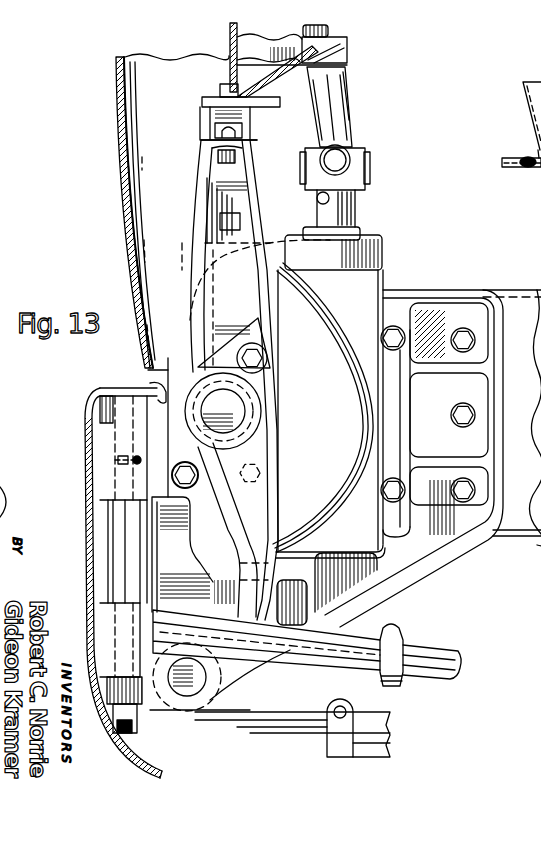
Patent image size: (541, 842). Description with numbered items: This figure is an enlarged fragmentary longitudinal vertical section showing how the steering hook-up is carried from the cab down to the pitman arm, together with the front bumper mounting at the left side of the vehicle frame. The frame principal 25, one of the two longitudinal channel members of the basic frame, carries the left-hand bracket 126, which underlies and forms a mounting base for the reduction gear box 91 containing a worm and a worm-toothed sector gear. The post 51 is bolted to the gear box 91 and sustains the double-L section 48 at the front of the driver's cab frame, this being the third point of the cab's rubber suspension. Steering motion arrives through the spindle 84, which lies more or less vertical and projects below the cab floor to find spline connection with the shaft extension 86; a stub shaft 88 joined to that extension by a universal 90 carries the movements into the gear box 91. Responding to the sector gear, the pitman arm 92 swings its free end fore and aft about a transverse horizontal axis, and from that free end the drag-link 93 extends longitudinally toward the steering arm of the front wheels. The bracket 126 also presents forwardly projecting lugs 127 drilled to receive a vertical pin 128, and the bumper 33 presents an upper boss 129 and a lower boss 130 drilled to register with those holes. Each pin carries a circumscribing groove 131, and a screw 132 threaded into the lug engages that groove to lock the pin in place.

The longitudinal channel member 25 is at (521, 300).
The front bumper 33 is at (88, 498).
The double-L section 48 is at (230, 40).
The post 51 is at (199, 192).
The spindle 84 is at (327, 30).
The shaft extension 86 is at (340, 112).
The stub shaft 88 is at (342, 211).
The universal 90 is at (342, 162).
The reduction gear box 91 is at (391, 270).
The pitman arm 92 is at (264, 524).
The drag-link 93 is at (437, 653).
The left-hand bracket 126 is at (445, 310).
The lug 127 is at (110, 442).
The vertical pin 128 is at (119, 563).
The upper boss 129 is at (158, 395).
The lower boss 130 is at (143, 690).
The circumscribing groove 131 is at (110, 463).
The screw 132 is at (140, 464).